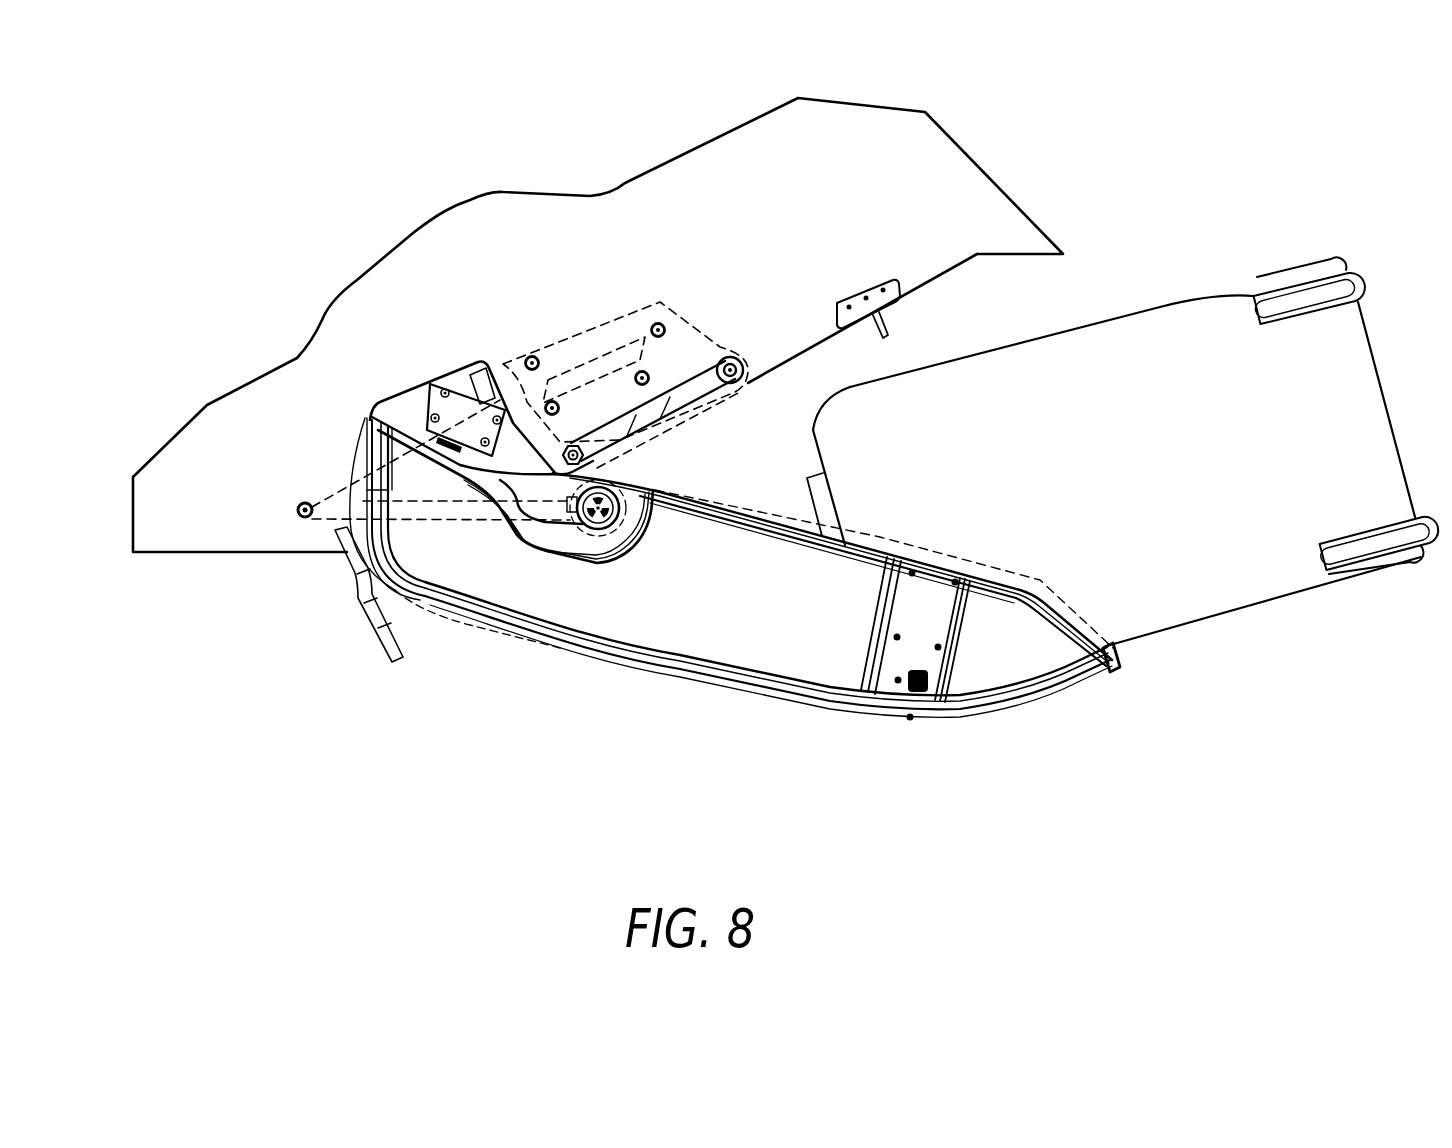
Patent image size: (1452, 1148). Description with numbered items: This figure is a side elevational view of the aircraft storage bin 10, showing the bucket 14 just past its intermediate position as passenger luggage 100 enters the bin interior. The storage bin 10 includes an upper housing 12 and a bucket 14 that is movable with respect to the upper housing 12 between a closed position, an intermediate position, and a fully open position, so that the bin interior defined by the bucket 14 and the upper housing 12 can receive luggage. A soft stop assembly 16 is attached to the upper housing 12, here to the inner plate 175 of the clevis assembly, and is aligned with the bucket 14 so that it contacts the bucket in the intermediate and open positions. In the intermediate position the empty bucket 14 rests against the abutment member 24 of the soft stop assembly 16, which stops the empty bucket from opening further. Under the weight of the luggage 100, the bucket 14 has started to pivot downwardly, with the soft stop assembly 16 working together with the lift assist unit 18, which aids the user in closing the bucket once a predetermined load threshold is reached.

The aircraft storage bin 10 is at (263, 161).
The upper housing 12 is at (862, 122).
The bucket 14 is at (1022, 665).
The soft stop assembly 16 is at (467, 423).
The lift assist unit 18 is at (653, 413).
The abutment member 24 is at (452, 455).
The passenger luggage 100 is at (1203, 317).
The inner plate 175 is at (598, 325).